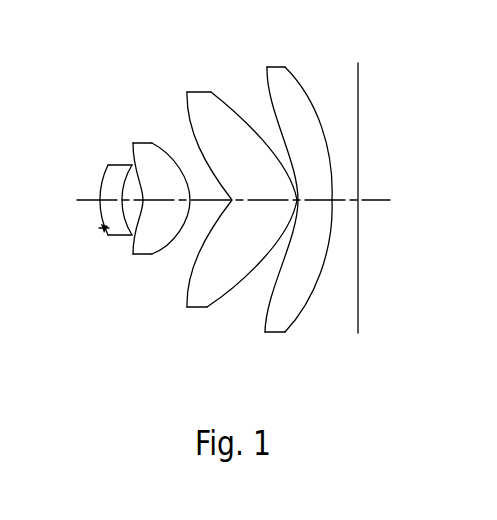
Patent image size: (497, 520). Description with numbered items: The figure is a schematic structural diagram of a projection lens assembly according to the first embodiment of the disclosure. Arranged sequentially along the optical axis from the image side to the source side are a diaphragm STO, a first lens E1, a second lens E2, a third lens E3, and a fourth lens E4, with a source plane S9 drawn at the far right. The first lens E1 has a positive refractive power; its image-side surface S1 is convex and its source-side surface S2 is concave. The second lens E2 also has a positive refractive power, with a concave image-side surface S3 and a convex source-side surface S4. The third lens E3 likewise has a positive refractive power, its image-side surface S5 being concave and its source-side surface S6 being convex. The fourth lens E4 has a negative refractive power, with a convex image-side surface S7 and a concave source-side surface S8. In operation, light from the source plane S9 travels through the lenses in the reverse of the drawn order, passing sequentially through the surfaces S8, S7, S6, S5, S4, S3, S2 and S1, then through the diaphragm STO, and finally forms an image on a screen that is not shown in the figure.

The first lens E1 is at (88, 205).
The second lens E2 is at (144, 205).
The third lens E3 is at (239, 205).
The fourth lens E4 is at (326, 205).
The diaphragm STO is at (65, 179).
The image-side surface of the first lens S1 is at (69, 269).
The source-side surface of the first lens S2 is at (96, 269).
The image-side surface of the second lens S3 is at (120, 258).
The source-side surface of the second lens S4 is at (161, 258).
The image-side surface of the third lens S5 is at (207, 232).
The source-side surface of the third lens S6 is at (252, 232).
The image-side surface of the fourth lens S7 is at (308, 220).
The source-side surface of the fourth lens S8 is at (336, 220).
The source plane S9 is at (397, 218).